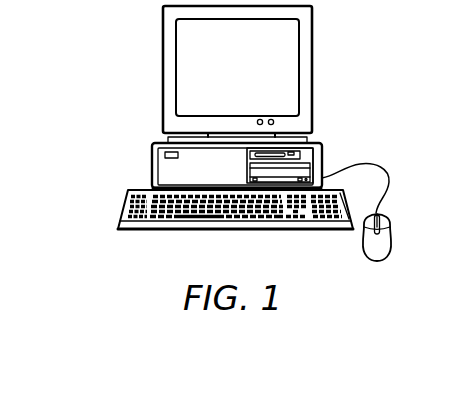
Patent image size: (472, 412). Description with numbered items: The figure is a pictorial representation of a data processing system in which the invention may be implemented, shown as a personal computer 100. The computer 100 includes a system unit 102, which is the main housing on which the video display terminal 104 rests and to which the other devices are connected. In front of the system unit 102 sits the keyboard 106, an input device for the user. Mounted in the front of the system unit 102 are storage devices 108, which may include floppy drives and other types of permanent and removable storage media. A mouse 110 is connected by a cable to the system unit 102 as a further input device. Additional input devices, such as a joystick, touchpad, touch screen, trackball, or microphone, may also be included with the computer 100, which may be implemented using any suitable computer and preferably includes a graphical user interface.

The computer 100 is at (100, 57).
The system unit 102 is at (152, 165).
The video display terminal 104 is at (312, 70).
The keyboard 106 is at (148, 232).
The storage devices 108 is at (322, 160).
The mouse 110 is at (375, 262).